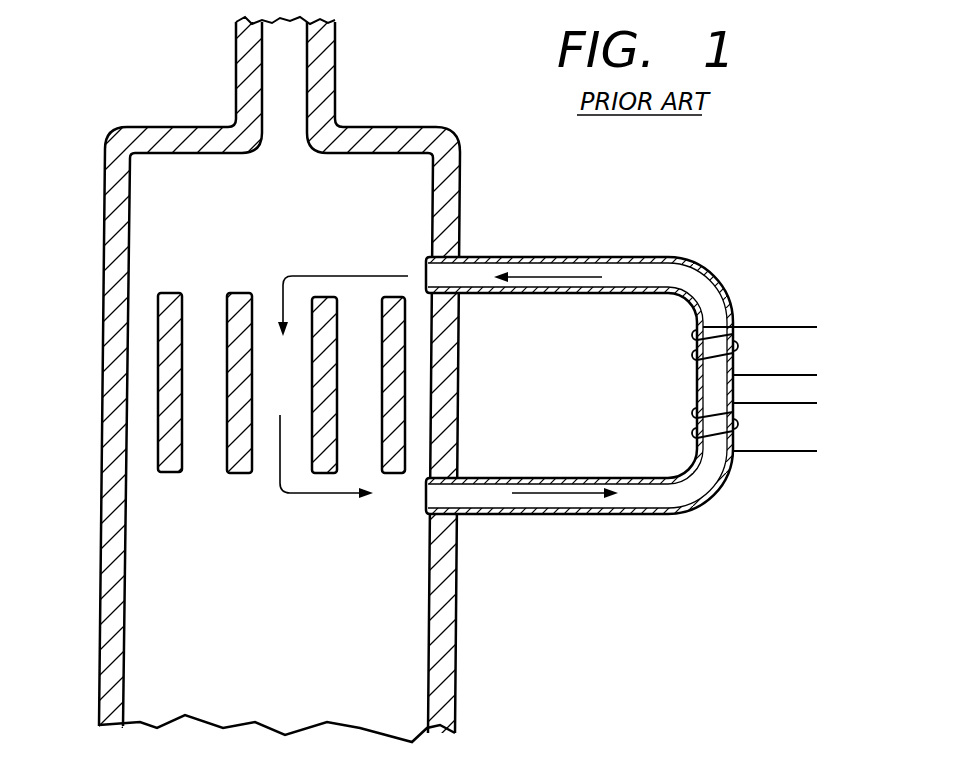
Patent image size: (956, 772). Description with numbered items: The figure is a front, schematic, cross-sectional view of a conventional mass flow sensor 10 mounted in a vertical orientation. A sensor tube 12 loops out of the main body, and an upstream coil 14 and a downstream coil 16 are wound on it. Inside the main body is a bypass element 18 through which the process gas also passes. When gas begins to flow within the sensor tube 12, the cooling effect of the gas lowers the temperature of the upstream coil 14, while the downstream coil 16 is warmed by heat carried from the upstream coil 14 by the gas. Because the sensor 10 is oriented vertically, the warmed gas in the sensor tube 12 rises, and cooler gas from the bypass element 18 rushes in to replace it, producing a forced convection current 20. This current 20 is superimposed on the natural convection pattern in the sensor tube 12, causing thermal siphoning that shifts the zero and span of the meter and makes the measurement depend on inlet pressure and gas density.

The mass flow sensor 10 is at (592, 579).
The sensor tube 12 is at (735, 279).
The upstream coil 14 is at (805, 350).
The downstream coil 16 is at (810, 428).
The bypass element 18 is at (200, 385).
The forced convection current 20 is at (565, 272).